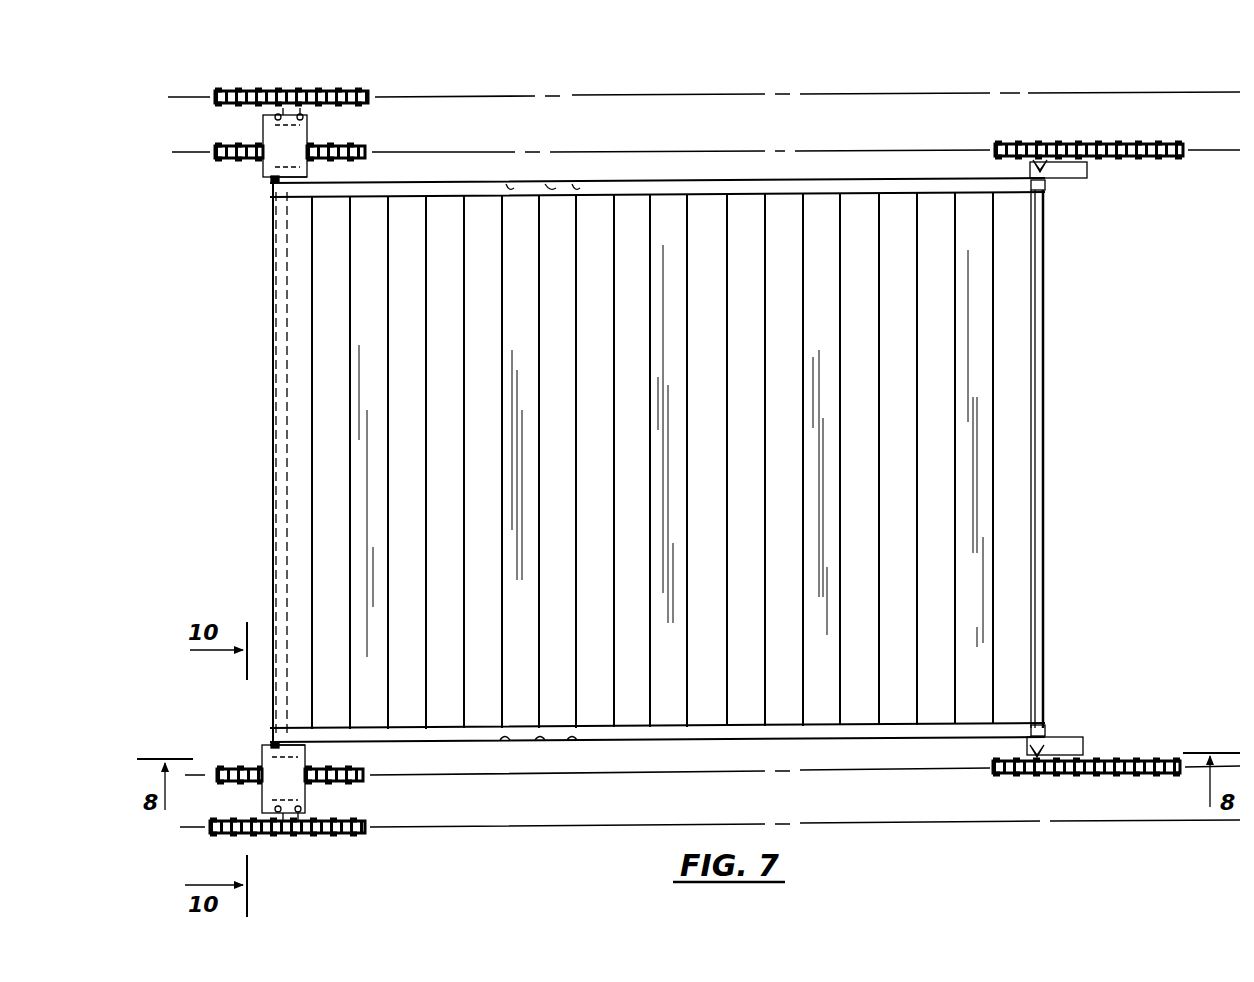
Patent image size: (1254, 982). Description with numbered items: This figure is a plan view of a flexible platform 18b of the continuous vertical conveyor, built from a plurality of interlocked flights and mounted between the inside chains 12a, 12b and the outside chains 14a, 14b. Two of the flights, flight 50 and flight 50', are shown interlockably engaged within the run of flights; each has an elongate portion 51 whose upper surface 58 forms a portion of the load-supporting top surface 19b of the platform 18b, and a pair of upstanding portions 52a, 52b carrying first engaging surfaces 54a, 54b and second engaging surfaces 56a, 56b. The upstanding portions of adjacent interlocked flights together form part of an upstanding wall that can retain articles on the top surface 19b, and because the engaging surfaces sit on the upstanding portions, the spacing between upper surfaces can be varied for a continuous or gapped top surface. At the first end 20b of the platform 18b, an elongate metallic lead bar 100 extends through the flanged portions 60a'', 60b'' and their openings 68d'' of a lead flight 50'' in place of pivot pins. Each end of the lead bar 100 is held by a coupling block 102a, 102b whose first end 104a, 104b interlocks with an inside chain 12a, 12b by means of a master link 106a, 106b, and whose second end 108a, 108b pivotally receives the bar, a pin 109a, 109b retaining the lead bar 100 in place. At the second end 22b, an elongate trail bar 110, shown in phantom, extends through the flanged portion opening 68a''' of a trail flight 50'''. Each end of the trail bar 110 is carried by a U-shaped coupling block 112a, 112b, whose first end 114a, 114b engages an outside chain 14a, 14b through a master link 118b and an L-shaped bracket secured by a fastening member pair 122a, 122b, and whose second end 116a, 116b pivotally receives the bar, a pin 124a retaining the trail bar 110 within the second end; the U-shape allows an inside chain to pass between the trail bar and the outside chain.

The flight 50 is at (657, 497).
The flight 50' is at (477, 774).
The lead flight 50'' is at (1069, 385).
The trail flight 50''' is at (252, 531).
The elongate portion 51 is at (578, 527).
The upstanding portion 52a is at (560, 732).
The upstanding portion 52b is at (557, 190).
The first engaging surface 54a is at (572, 740).
The first engaging surface 54b is at (575, 184).
The second engaging surface 56a is at (540, 738).
The second engaging surface 56b is at (508, 184).
The upper surface 58 is at (582, 432).
The trail bar 110 is at (272, 402).
The second end 22b is at (260, 477).
The lead bar 100 is at (1045, 437).
The first end 20b is at (1058, 521).
The top surface 19b is at (935, 587).
The flexible platform 18b is at (985, 647).
The coupling block 112b is at (297, 137).
The first end 114b is at (312, 117).
The second end 116b is at (300, 178).
The pin 124a is at (275, 181).
The opening 68d'' is at (238, 208).
The master link 118b is at (293, 92).
The fastening member 122b is at (300, 90).
The outside chain 14b is at (365, 96).
The inside chain 12b is at (1185, 152).
The first end 104b is at (1090, 168).
The master link 106b is at (1080, 178).
The coupling block 102b is at (1050, 186).
The flanged portion 60b'' is at (1084, 222).
The second end 108b is at (1033, 168).
The pin 109b is at (1043, 140).
The coupling block 112a is at (278, 790).
The first end 114a is at (305, 807).
The second end 116a is at (300, 745).
The flanged portion opening 68a''' is at (228, 702).
The fastening member 122a is at (295, 835).
The outside chain 14a is at (348, 838).
The inside chain 12a is at (1168, 757).
The first end 104a is at (1082, 748).
The master link 106a is at (1075, 738).
The coupling block 102a is at (1050, 735).
The flanged portion 60a'' is at (1079, 703).
The second end 108a is at (1030, 745).
The pin 109a is at (1036, 780).